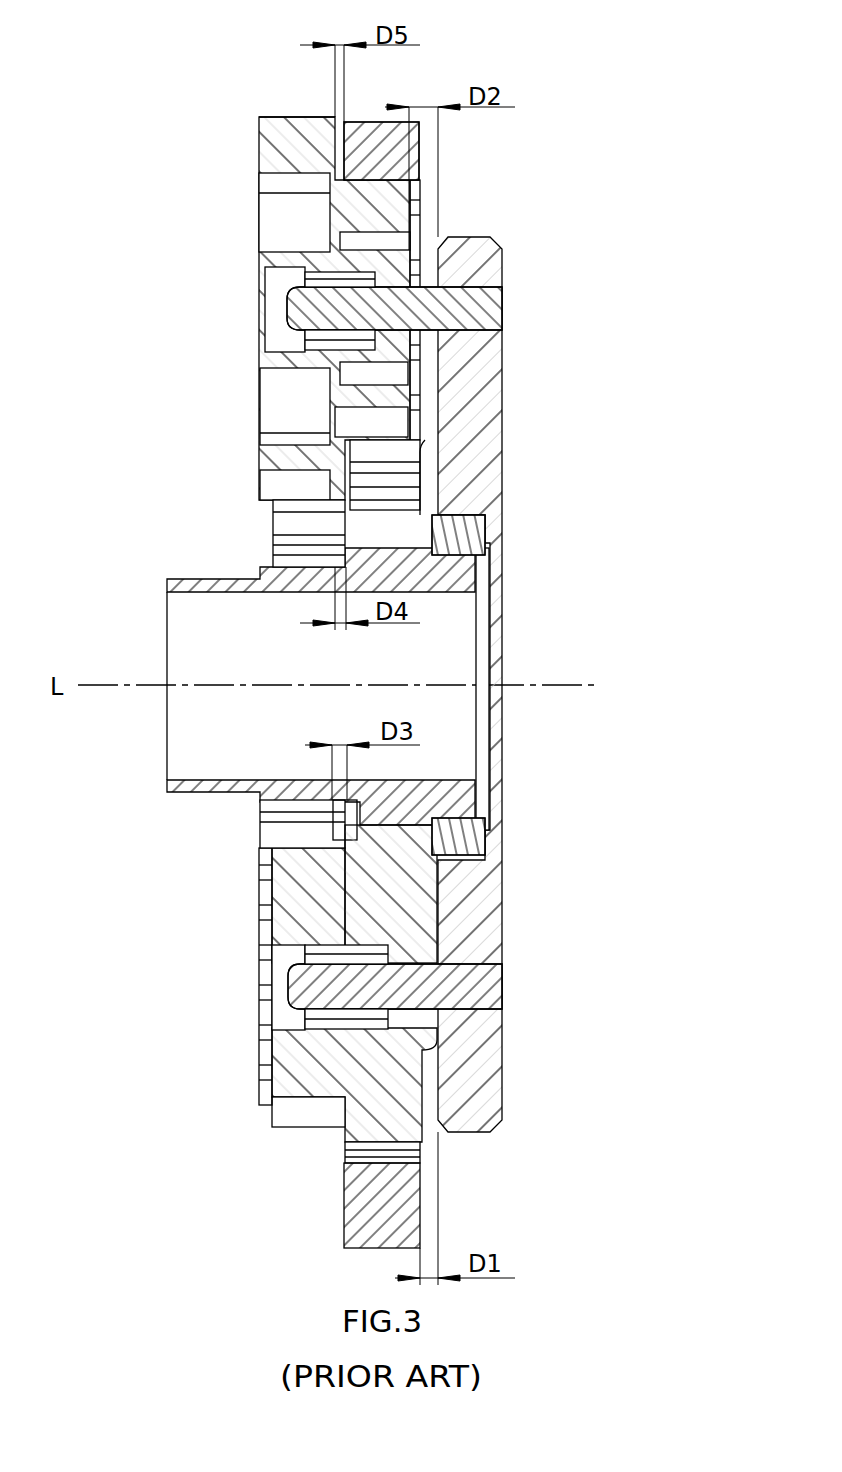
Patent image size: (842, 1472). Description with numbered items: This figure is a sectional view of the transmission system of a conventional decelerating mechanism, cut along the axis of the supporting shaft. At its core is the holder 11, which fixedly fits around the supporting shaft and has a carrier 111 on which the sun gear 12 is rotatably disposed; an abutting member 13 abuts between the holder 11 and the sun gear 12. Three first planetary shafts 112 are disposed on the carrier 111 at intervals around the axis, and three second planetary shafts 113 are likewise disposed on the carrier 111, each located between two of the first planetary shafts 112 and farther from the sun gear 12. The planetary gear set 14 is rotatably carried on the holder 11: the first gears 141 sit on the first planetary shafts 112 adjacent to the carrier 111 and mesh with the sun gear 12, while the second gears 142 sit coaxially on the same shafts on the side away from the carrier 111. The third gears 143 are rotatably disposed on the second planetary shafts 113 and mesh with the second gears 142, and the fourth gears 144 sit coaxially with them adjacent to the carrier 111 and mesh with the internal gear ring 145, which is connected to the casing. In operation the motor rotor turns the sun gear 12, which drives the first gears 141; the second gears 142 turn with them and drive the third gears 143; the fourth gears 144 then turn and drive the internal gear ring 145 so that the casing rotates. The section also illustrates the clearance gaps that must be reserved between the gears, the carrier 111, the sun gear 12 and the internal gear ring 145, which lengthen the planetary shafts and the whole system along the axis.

The holder 11 is at (527, 657).
The carrier 111 is at (485, 385).
The first planetary shafts 112 is at (490, 990).
The second planetary shafts 113 is at (480, 310).
The sun gear 12 is at (450, 578).
The abutting member 13 is at (455, 523).
The planetary gear set 14 is at (400, 878).
The first gears 141 is at (425, 490).
The second gears 142 is at (285, 530).
The third gears 143 is at (297, 127).
The fourth gears 144 is at (375, 208).
The internal gear ring 145 is at (375, 127).